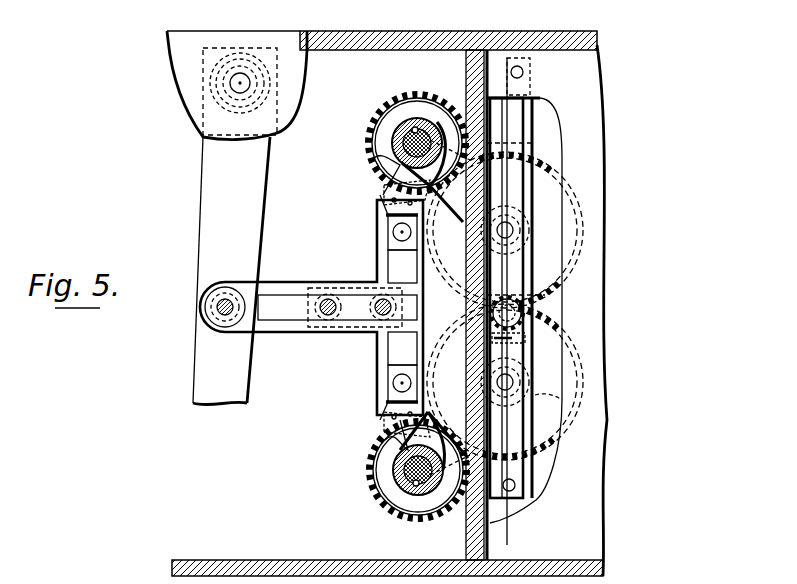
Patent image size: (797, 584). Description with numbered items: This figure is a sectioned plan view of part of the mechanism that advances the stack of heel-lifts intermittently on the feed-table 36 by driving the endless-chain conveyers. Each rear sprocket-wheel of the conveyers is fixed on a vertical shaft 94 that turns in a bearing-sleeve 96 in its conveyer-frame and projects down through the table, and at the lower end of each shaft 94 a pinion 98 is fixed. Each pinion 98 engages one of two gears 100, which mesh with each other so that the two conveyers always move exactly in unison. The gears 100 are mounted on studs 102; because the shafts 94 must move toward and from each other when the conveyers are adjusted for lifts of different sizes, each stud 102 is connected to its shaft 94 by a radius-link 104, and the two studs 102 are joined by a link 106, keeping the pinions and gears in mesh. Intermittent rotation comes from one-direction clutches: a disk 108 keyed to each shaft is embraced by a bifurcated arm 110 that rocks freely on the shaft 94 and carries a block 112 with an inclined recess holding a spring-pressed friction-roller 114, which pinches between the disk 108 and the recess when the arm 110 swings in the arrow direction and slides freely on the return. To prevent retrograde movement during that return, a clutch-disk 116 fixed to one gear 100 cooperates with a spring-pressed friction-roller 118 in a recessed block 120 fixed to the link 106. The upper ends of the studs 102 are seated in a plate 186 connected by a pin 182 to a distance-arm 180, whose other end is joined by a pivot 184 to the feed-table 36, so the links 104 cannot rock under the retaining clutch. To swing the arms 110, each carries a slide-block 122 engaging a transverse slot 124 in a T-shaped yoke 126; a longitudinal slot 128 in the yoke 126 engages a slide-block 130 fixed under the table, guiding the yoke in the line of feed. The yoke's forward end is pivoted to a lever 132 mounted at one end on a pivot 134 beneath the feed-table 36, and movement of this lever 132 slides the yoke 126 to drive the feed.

The feed-table 36 is at (343, 50).
The vertical shaft 94 is at (412, 128).
The bearing-sleeve 96 is at (416, 128).
The pinion 98 is at (378, 106).
The gear 100 is at (570, 184).
The stud 102 is at (500, 227).
The radius-link 104 is at (482, 203).
The link 106 is at (570, 276).
The disk 108 is at (382, 133).
The bifurcated arm 110 is at (372, 160).
The block 112 is at (376, 196).
The friction-roller 114 is at (392, 187).
The clutch-disk 116 is at (545, 403).
The friction-roller 118 is at (525, 338).
The recessed block 120 is at (530, 312).
The slide-block 122 is at (392, 233).
The transverse slot 124 is at (396, 350).
The T-shaped yoke 126 is at (360, 283).
The longitudinal slot 128 is at (288, 300).
The slide-block 130 is at (348, 315).
The lever 132 is at (197, 205).
The pivot 134 is at (238, 84).
The distance-arm 180 is at (512, 468).
The pin 182 is at (510, 492).
The pivot 184 is at (519, 66).
The plate 186 is at (530, 478).